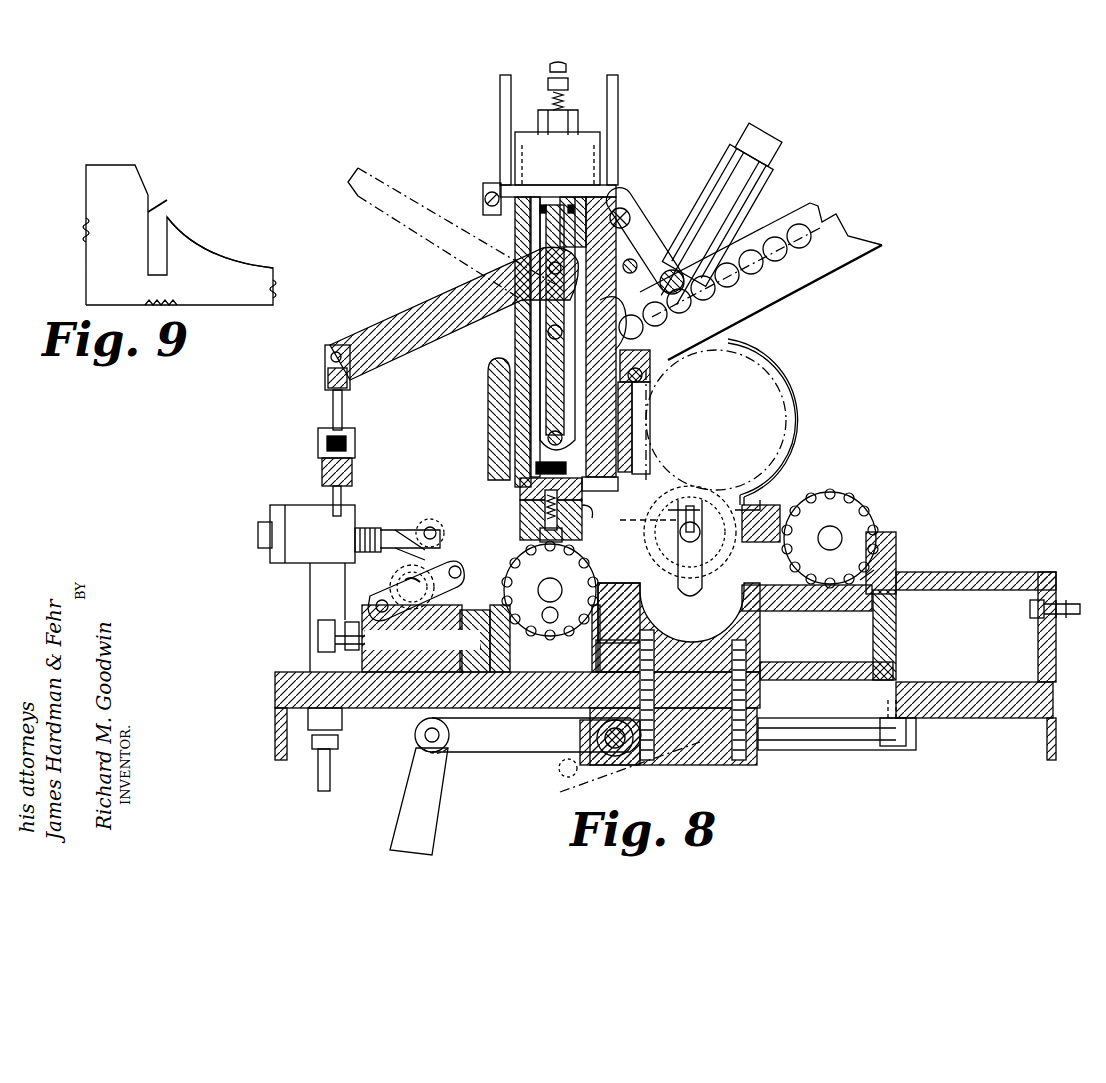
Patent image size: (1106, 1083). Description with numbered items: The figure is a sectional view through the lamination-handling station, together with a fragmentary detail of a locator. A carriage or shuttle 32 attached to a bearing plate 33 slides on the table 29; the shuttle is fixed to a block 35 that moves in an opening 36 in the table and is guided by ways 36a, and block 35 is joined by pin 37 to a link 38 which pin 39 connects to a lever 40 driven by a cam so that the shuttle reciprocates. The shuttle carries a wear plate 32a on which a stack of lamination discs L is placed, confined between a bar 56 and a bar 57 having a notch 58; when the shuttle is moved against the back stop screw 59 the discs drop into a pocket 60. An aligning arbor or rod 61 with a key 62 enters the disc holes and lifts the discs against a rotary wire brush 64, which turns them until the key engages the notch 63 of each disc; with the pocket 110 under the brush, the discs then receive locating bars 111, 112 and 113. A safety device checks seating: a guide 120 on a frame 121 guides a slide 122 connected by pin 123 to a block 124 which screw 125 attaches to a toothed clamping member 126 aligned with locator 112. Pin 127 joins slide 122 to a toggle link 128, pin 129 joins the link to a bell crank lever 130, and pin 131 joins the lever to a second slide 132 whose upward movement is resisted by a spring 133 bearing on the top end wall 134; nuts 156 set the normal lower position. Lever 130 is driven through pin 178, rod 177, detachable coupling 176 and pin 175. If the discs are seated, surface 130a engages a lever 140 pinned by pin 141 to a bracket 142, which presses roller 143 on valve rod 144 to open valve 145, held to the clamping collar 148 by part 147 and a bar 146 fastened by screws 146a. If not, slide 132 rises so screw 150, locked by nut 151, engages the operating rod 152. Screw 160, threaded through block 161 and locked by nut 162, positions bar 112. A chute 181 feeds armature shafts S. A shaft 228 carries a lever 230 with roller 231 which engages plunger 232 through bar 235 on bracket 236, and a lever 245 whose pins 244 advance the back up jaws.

In FIG. 9, the carriage or shuttle 32 is at (88, 197).
In FIG. 8, the carriage or shuttle 32 is at (888, 620).
In FIG. 9, the locating bar 112 is at (160, 212).
In FIG. 8, the locating bar 112 is at (548, 640).
In FIG. 9, the pocket 110 is at (218, 255).
In FIG. 8, the pocket 110 is at (598, 586).
In FIG. 8, the operating rod 152 is at (614, 80).
In FIG. 8, the screw 150 is at (567, 72).
In FIG. 8, the nut 151 is at (568, 92).
In FIG. 8, the nuts 156 is at (575, 124).
In FIG. 8, the top end wall 134 is at (531, 145).
In FIG. 8, the clamping collar 148 is at (488, 186).
In FIG. 8, the guide 120 is at (525, 200).
In FIG. 8, the slide 132 is at (572, 215).
In FIG. 8, the spring 133 is at (615, 200).
In FIG. 8, the part of collar 147 is at (618, 206).
In FIG. 8, the link 128 is at (545, 368).
In FIG. 8, the pin 129 is at (548, 344).
In FIG. 8, the pin 127 is at (548, 440).
In FIG. 8, the frame 121 is at (493, 395).
In FIG. 8, the screw 125 is at (522, 492).
In FIG. 8, the toothed rib or clamping member 126 is at (522, 521).
In FIG. 8, the block 124 is at (582, 531).
In FIG. 8, the slide 122 is at (631, 514).
In FIG. 8, the pin 123 is at (600, 490).
In FIG. 8, the bell crank lever 130 is at (405, 203).
In FIG. 8, the pin 131 is at (548, 262).
In FIG. 8, the pin 178 is at (323, 352).
In FIG. 8, the rod 177 is at (331, 405).
In FIG. 8, the detachable coupling 176 is at (318, 440).
In FIG. 8, the pin 175 is at (331, 492).
In FIG. 8, the valve 145 is at (710, 178).
In FIG. 8, the screws 146a is at (668, 175).
In FIG. 8, the bar 146 is at (665, 200).
In FIG. 8, the roller 143 is at (640, 232).
In FIG. 8, the valve rod 144 is at (660, 248).
In FIG. 8, the lever 140 is at (650, 262).
In FIG. 8, the pin 141 is at (646, 366).
In FIG. 8, the bracket 142 is at (636, 402).
In FIG. 8, the surface 130a is at (625, 348).
In FIG. 8, the chute 181 is at (850, 262).
In FIG. 8, the armature shafts S is at (770, 256).
In FIG. 8, the rotary wire brush 64 is at (772, 380).
In FIG. 8, the bar 56 is at (780, 508).
In FIG. 8, the key 62 is at (695, 520).
In FIG. 8, the aligning arbor or rod 61 is at (700, 533).
In FIG. 8, the notch 63 is at (842, 540).
In FIG. 8, the lamination discs L is at (832, 492).
In FIG. 8, the bar 57 is at (880, 552).
In FIG. 8, the notch 58 is at (872, 580).
In FIG. 8, the wear plate 32a is at (800, 590).
In FIG. 8, the bearing plate 33 is at (895, 668).
In FIG. 8, the back stop screw 59 is at (1032, 614).
In FIG. 8, the table 29 is at (955, 700).
In FIG. 8, the opening 36 is at (855, 735).
In FIG. 8, the ways 36a is at (880, 742).
In FIG. 8, the pocket 60 is at (726, 614).
In FIG. 8, the locating bar 113 is at (588, 650).
In FIG. 8, the locating bar 111 is at (500, 665).
In FIG. 8, the bracket 236 is at (345, 530).
In FIG. 8, the bar 235 is at (275, 512).
In FIG. 8, the plunger 232 is at (354, 540).
In FIG. 8, the roller 231 is at (438, 520).
In FIG. 8, the lever 230 is at (428, 540).
In FIG. 8, the shaft 228 is at (425, 572).
In FIG. 8, the lever 245 is at (385, 598).
In FIG. 8, the pins 244 is at (378, 612).
In FIG. 8, the nut 162 is at (345, 622).
In FIG. 8, the screw 160 is at (318, 637).
In FIG. 8, the block 161 is at (365, 662).
In FIG. 8, the block 35 is at (756, 765).
In FIG. 8, the pin 39 is at (424, 735).
In FIG. 8, the link 38 is at (536, 740).
In FIG. 8, the lever 40 is at (410, 800).
In FIG. 8, the pin 37 is at (616, 750).